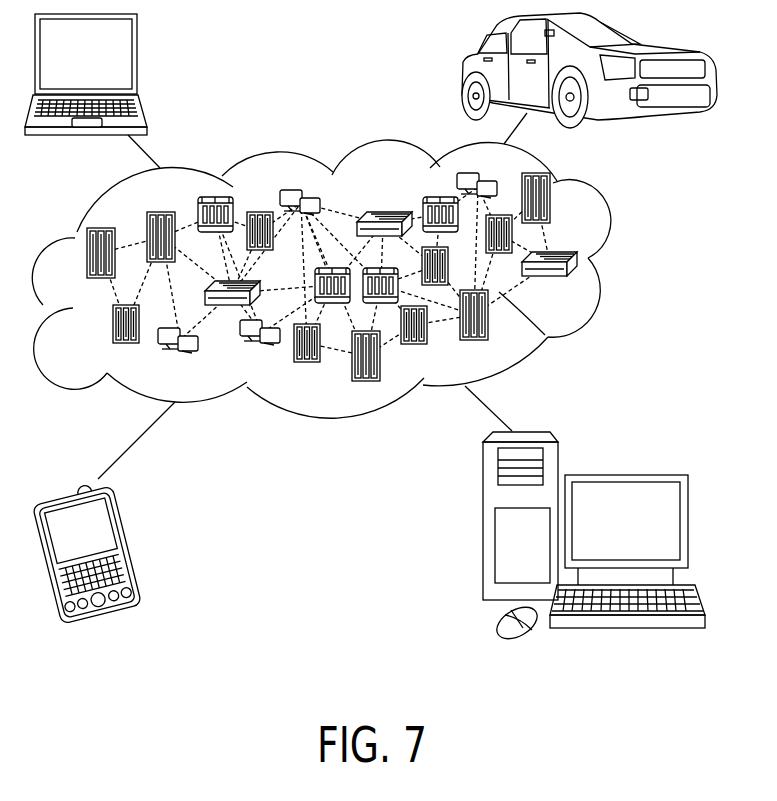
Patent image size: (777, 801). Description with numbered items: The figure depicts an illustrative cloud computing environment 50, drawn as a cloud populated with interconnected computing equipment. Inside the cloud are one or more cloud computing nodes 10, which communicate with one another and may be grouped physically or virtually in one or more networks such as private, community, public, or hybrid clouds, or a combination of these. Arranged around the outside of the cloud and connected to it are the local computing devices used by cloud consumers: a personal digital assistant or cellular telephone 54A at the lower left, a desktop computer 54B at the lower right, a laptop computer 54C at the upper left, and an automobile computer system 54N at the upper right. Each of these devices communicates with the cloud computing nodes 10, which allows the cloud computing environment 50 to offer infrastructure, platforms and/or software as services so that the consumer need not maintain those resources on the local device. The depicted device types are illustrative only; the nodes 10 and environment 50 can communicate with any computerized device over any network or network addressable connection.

The cloud computing node 10 is at (587, 286).
The cloud computing environment 50 is at (627, 265).
The personal digital assistant (PDA) or cellular telephone 54A is at (130, 541).
The desktop computer 54B is at (624, 474).
The laptop computer 54C is at (138, 58).
The automobile computer system 54N is at (460, 72).